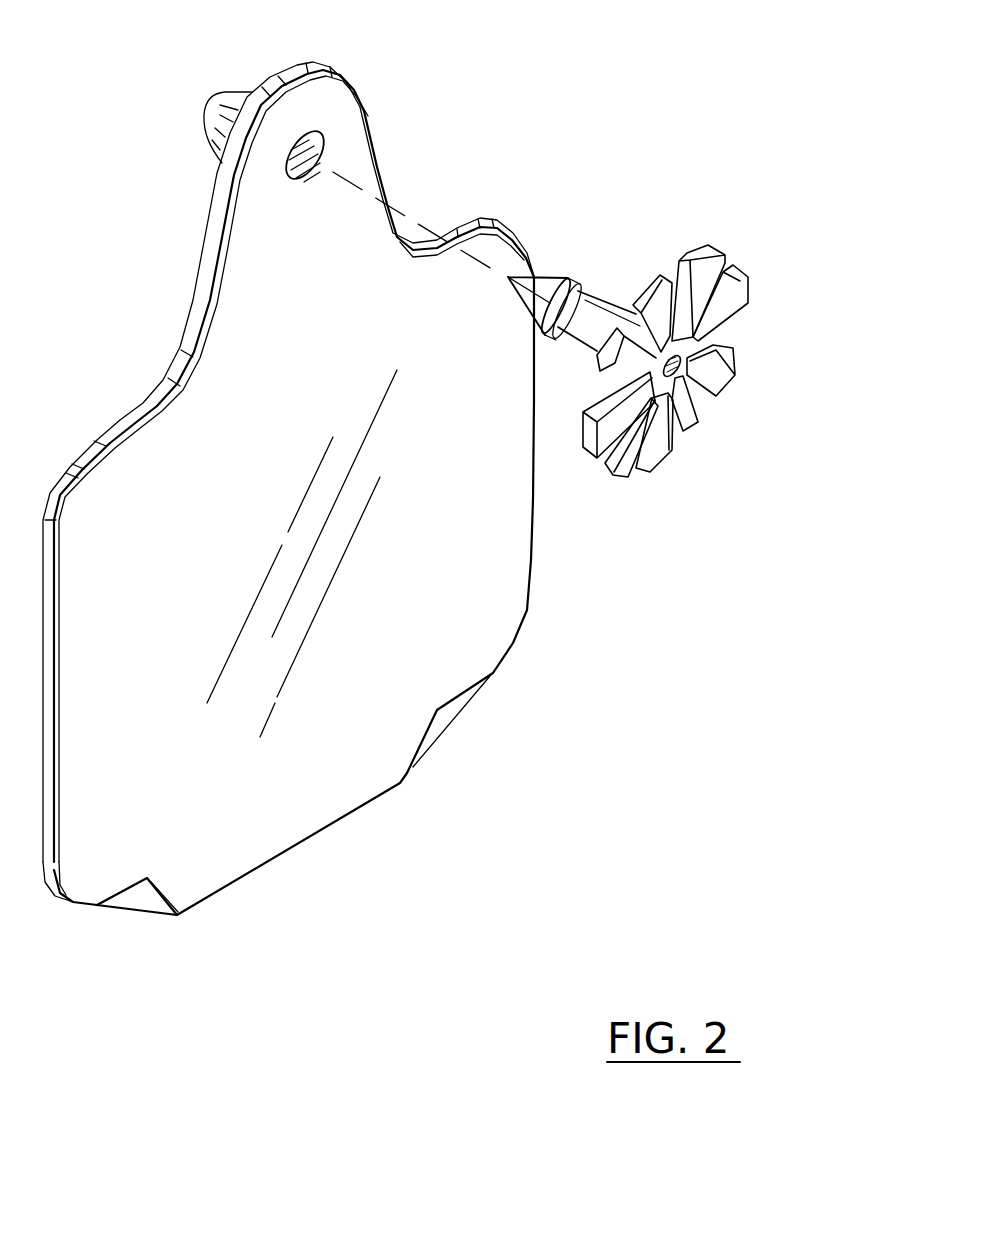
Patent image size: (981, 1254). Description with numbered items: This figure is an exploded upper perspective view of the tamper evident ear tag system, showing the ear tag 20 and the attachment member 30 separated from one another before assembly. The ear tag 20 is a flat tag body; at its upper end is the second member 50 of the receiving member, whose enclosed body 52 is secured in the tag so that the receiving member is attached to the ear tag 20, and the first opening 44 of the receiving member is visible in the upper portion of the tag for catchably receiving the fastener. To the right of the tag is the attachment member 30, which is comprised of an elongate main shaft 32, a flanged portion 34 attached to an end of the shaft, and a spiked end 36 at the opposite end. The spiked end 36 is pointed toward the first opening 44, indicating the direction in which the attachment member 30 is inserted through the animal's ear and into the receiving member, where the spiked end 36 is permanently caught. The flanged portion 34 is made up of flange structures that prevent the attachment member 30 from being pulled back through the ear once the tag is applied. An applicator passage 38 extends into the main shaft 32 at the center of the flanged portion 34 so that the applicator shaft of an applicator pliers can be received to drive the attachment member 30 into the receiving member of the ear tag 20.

The ear tag 20 is at (382, 464).
The attachment member 30 is at (729, 388).
The main shaft 32 is at (600, 287).
The flanged portion 34 is at (682, 428).
The spiked end 36 is at (668, 251).
The applicator passage 38 is at (675, 369).
The first opening 44 is at (323, 157).
The second member 50 is at (171, 126).
The enclosed body 52 is at (218, 130).